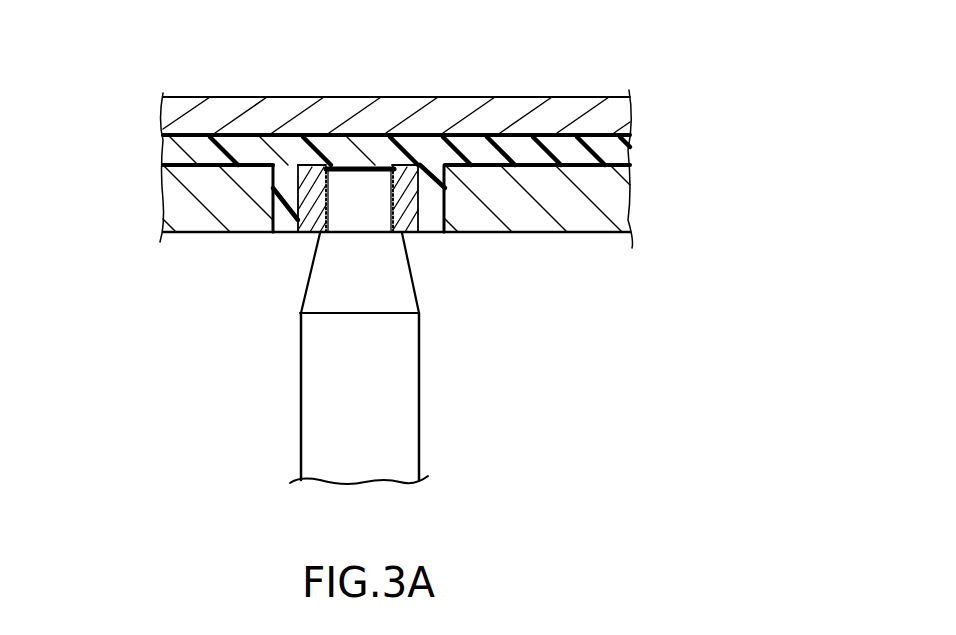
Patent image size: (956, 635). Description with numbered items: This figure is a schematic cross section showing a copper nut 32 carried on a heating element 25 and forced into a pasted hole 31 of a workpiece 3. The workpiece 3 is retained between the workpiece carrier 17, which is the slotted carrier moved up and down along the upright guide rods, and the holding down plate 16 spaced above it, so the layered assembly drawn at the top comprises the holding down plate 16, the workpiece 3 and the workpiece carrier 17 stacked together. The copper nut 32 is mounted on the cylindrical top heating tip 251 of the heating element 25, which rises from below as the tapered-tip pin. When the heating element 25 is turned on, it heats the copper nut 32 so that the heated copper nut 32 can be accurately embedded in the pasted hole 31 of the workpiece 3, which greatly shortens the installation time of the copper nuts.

The holding down plate 16 is at (540, 110).
The workpiece 3 is at (170, 150).
The workpiece carrier 17 is at (187, 218).
The pasted hole 31 is at (405, 212).
The copper nut 32 is at (410, 237).
The heating element 25 is at (323, 367).
The cylindrical top heating tip 251 is at (347, 208).